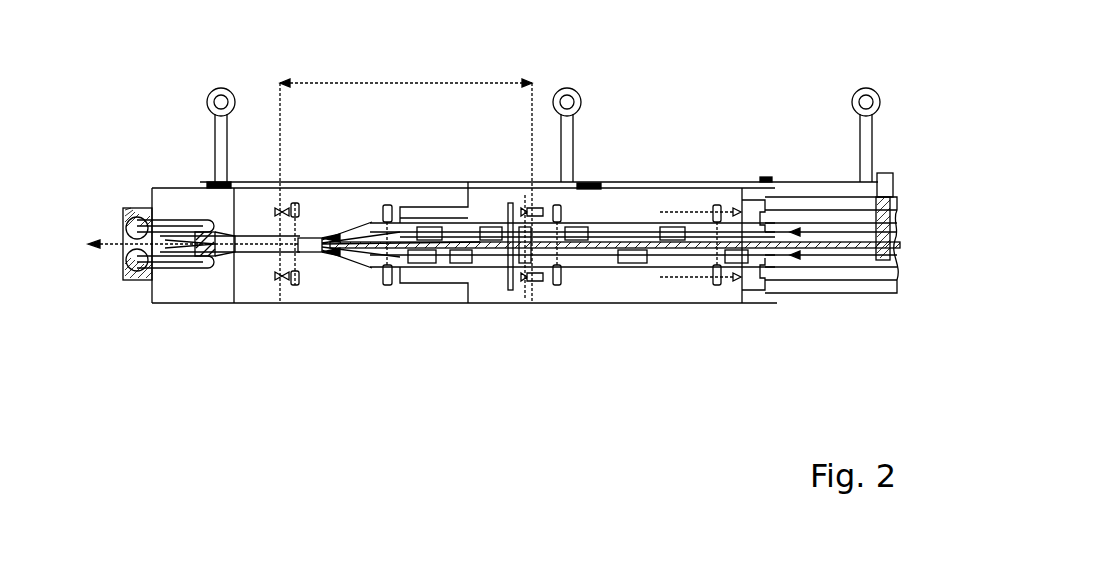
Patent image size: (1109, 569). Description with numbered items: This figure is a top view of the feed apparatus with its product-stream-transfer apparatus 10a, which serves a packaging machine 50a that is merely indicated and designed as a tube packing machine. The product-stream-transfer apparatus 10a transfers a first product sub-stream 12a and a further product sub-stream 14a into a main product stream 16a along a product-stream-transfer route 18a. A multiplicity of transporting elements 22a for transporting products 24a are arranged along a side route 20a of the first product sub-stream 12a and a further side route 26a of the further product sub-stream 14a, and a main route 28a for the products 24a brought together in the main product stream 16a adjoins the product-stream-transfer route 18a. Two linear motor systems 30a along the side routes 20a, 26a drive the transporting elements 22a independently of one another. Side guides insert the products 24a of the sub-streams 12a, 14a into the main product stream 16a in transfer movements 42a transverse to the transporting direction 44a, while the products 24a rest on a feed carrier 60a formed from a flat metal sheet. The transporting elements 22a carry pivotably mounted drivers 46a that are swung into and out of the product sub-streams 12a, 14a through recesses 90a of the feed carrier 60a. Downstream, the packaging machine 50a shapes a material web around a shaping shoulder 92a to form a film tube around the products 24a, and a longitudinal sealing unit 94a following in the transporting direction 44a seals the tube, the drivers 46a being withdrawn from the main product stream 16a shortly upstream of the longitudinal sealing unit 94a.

The product-stream-transfer apparatus 10a is at (375, 325).
The first product sub-stream 12a is at (623, 237).
The further product sub-stream 14a is at (684, 264).
The main product stream 16a is at (268, 256).
The product-stream-transfer route 18a is at (410, 83).
The side route 20a is at (450, 228).
The transporting elements 22a is at (503, 290).
The products 24a is at (428, 228).
The further side route 26a is at (424, 262).
The main route 28a is at (222, 306).
The linear motor systems 30a is at (827, 253).
The transfer movements 42a is at (370, 260).
The transporting direction 44a is at (120, 258).
The drivers 46a is at (517, 290).
The packaging machine 50a is at (127, 198).
The feed carrier 60a is at (692, 217).
The recesses 90a is at (605, 264).
The shaping shoulder 92a is at (240, 200).
The longitudinal sealing unit 94a is at (143, 270).